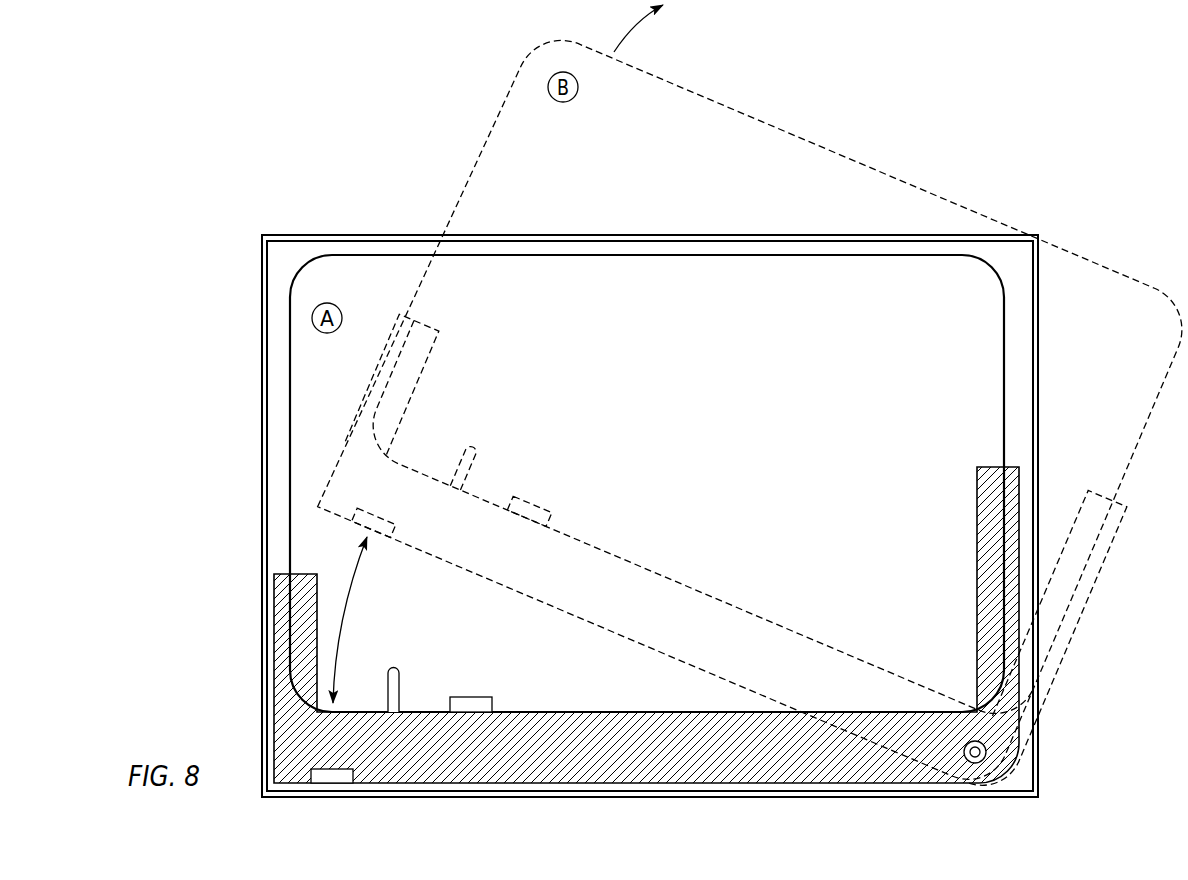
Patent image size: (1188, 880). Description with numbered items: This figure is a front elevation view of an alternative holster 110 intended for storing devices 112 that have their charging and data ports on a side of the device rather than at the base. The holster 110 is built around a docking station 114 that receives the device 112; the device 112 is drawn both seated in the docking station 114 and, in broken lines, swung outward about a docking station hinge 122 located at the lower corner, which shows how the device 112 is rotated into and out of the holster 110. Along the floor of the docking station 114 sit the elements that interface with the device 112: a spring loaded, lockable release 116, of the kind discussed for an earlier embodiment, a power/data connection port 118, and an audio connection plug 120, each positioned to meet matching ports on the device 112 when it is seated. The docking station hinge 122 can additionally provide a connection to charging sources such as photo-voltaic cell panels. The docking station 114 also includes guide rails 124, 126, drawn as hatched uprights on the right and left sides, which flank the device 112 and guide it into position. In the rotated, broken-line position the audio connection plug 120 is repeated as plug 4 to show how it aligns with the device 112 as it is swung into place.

The holster 110 is at (930, 140).
The device 112 is at (986, 353).
The docking station 114 is at (521, 767).
The spring loaded, lockable release 116 is at (317, 768).
The power/data connection port 118 is at (477, 703).
The audio connection plug 120 is at (393, 673).
The docking station hinge 122 is at (975, 750).
The guide rail 124 is at (982, 528).
The guide rail 126 is at (283, 647).
The alignment pin 4 is at (473, 448).